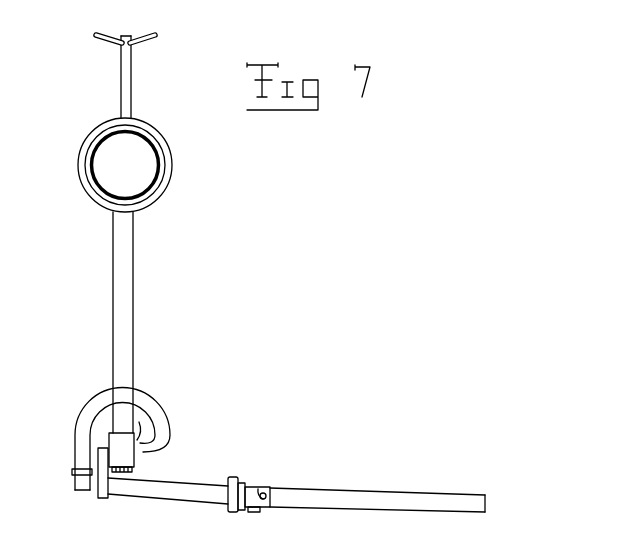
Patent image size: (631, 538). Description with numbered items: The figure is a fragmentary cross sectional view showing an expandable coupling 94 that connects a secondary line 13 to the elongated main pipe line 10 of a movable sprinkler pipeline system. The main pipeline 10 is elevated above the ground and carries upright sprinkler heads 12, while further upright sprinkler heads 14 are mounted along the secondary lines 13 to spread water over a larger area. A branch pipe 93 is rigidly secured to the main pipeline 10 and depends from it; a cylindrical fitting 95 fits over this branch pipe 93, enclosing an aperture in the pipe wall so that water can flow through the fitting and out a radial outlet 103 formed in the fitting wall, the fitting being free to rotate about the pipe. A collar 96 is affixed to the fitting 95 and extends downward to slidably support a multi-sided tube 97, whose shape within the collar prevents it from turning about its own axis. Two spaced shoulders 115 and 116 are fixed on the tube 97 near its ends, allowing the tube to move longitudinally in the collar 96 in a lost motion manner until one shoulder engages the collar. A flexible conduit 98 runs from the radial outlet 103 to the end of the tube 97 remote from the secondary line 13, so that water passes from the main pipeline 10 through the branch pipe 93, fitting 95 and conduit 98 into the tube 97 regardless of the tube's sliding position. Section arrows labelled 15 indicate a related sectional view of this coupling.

The main pipe line 10 is at (166, 172).
The upright sprinkler head 12 is at (127, 62).
The secondary line 13 is at (382, 494).
The upright sprinkler head 14 is at (102, 378).
The section line 15- 15 is at (115, 387).
The branch pipe 93 is at (128, 285).
The expandable coupling 94 is at (137, 465).
The cylindrical fitting 95 is at (145, 431).
The collar 96 is at (107, 496).
The tube 97 is at (177, 489).
The flexible conduit 98 is at (163, 412).
The radial outlet 103 is at (142, 434).
The shoulder 115 is at (96, 474).
The shoulder 116 is at (225, 495).